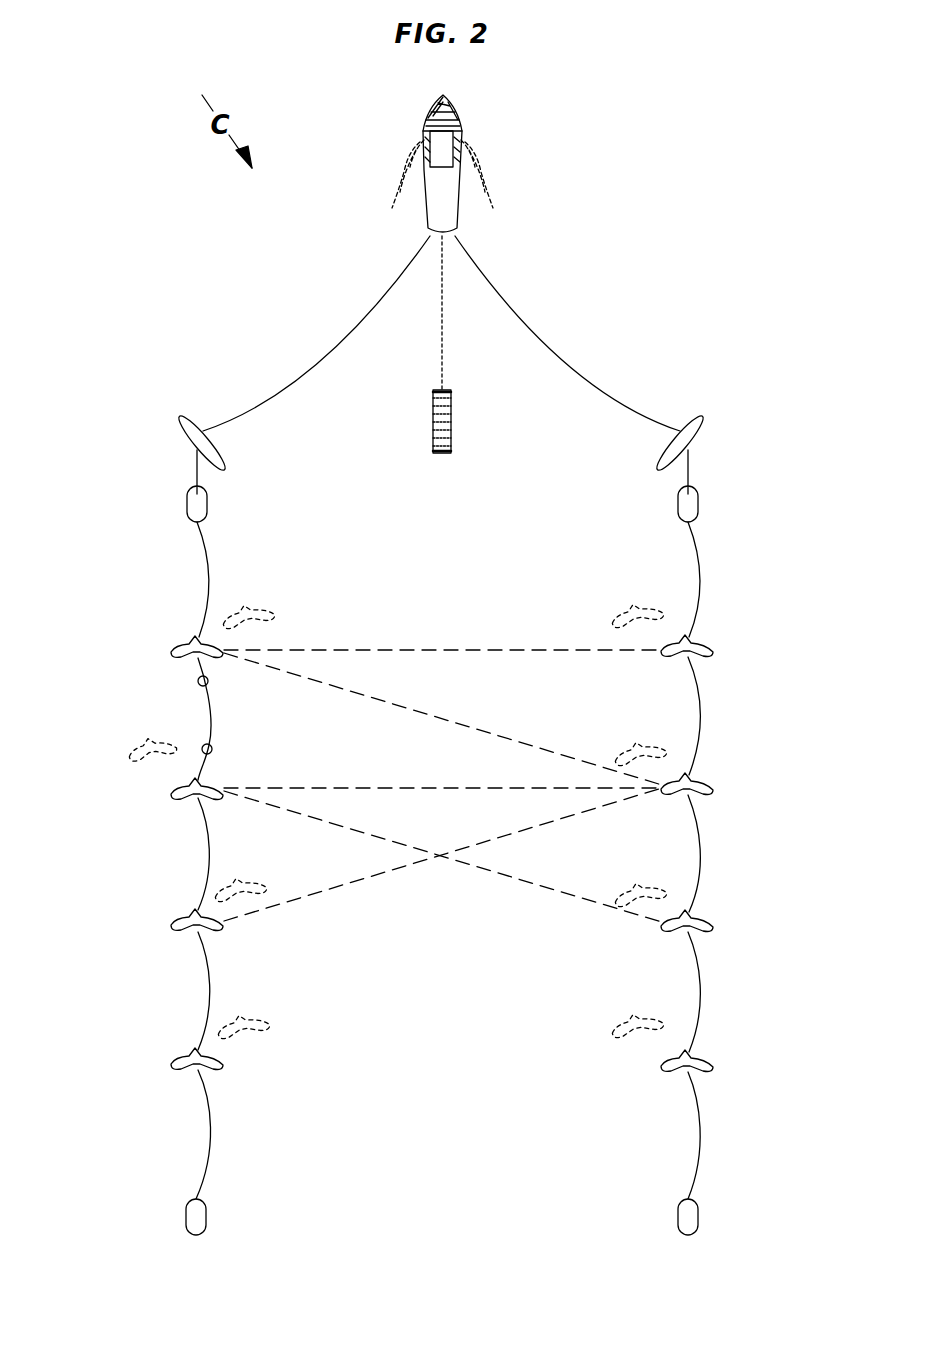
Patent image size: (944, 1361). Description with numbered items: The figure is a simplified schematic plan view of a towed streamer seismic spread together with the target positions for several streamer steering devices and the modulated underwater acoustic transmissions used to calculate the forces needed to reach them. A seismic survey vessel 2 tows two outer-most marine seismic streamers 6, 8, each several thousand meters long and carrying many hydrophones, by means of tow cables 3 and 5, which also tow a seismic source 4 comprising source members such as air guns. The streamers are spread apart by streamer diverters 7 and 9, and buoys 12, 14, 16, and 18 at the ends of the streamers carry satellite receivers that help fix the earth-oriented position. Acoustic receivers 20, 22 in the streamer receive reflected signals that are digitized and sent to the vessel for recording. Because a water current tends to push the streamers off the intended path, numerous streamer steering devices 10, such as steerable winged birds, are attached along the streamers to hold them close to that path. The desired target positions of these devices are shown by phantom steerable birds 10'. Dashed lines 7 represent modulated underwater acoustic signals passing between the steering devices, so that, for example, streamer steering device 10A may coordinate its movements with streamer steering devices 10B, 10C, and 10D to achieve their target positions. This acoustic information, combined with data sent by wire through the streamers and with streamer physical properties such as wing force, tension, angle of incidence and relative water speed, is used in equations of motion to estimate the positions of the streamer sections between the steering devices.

The seismic survey vessel 2 is at (430, 112).
The tow cable 3 is at (377, 310).
The seismic source 4 is at (451, 424).
The tow cable 5 is at (540, 340).
The marine seismic streamer 6 is at (205, 555).
The streamer diverter / modulated underwater acoustic signals 7 is at (182, 430).
The marine seismic streamer 8 is at (701, 555).
The streamer diverter 9 is at (703, 427).
The streamer steering device 10 is at (442, 844).
The streamer steering device 10A is at (713, 782).
The streamer steering device 10B is at (175, 920).
The streamer steering device 10C is at (175, 790).
The streamer steering device 10D is at (175, 645).
The phantom steerable bird 10' is at (367, 807).
The buoy 12 is at (187, 505).
The buoy 14 is at (186, 1218).
The buoy 16 is at (698, 505).
The buoy 18 is at (698, 1218).
The acoustic receiver 20 is at (209, 683).
The acoustic receiver 22 is at (213, 749).